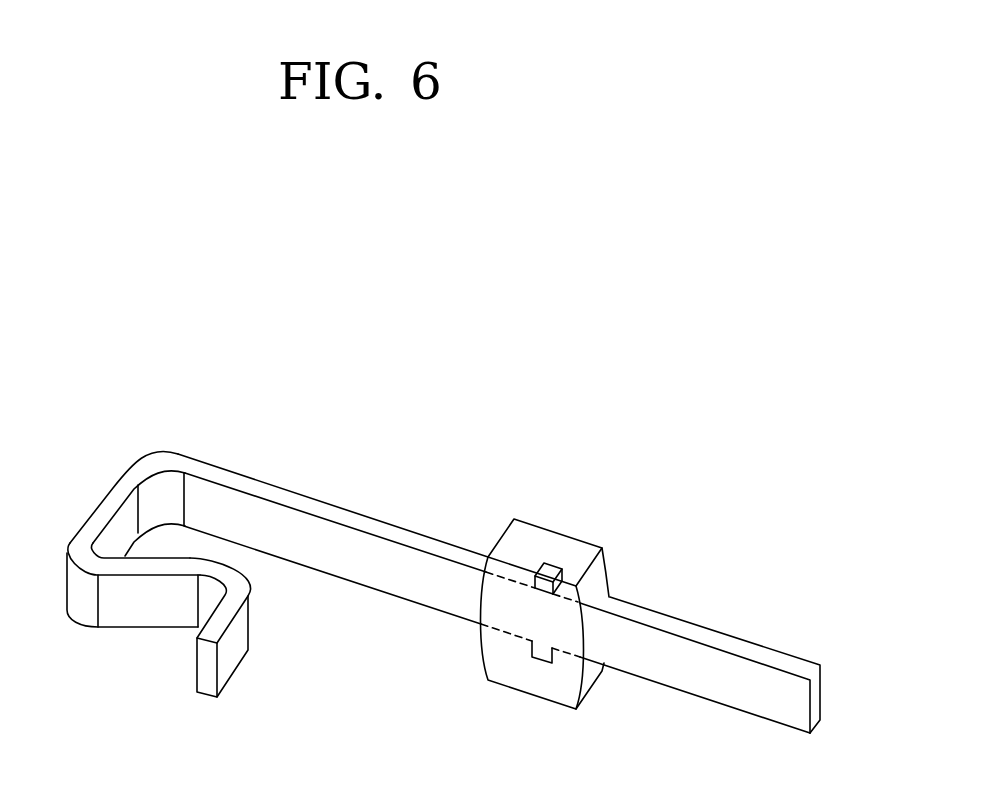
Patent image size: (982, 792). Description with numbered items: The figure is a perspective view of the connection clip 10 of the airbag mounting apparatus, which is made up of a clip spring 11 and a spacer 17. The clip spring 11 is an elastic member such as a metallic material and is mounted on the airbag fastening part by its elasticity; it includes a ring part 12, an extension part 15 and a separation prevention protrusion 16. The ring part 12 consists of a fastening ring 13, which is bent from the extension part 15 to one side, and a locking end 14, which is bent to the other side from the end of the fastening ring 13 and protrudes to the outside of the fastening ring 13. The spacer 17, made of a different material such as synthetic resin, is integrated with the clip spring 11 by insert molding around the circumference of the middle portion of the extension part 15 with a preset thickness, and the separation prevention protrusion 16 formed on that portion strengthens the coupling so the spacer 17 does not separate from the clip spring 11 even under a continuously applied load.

The connection clip 10 is at (708, 472).
The clip spring 11 is at (423, 609).
The ring part 12 is at (82, 707).
The fastening ring 13 is at (133, 600).
The locking end 14 is at (203, 680).
The extension part 15 is at (405, 563).
The separation prevention protrusion 16 is at (552, 567).
The spacer 17 is at (517, 689).